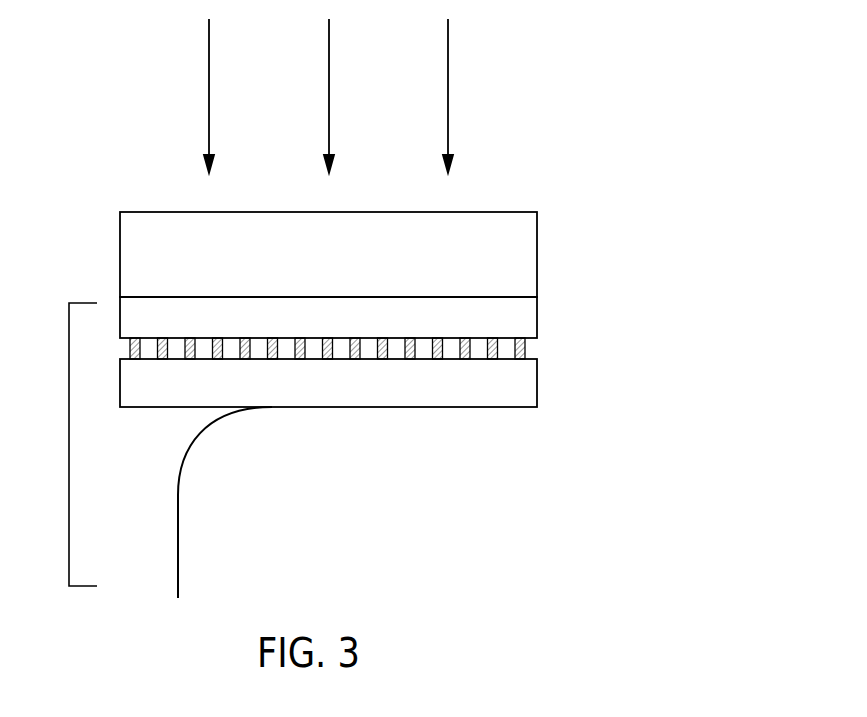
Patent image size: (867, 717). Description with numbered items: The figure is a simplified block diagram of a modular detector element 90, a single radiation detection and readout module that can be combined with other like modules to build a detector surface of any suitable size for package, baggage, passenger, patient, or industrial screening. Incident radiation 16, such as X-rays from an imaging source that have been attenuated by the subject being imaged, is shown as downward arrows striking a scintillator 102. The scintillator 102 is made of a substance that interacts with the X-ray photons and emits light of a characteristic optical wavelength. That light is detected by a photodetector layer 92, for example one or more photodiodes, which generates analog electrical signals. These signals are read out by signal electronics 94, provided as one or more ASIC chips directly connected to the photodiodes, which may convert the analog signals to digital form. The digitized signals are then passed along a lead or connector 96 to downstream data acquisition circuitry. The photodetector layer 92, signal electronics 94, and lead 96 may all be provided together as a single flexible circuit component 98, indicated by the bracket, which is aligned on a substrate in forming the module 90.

The radiation 16 is at (522, 98).
The modular detector element 90 is at (68, 220).
The photodetector layer 92 is at (340, 328).
The signal electronics 94 is at (340, 395).
The lead or connector 96 is at (180, 541).
The flexible circuit component 98 is at (69, 445).
The scintillator 102 is at (345, 269).